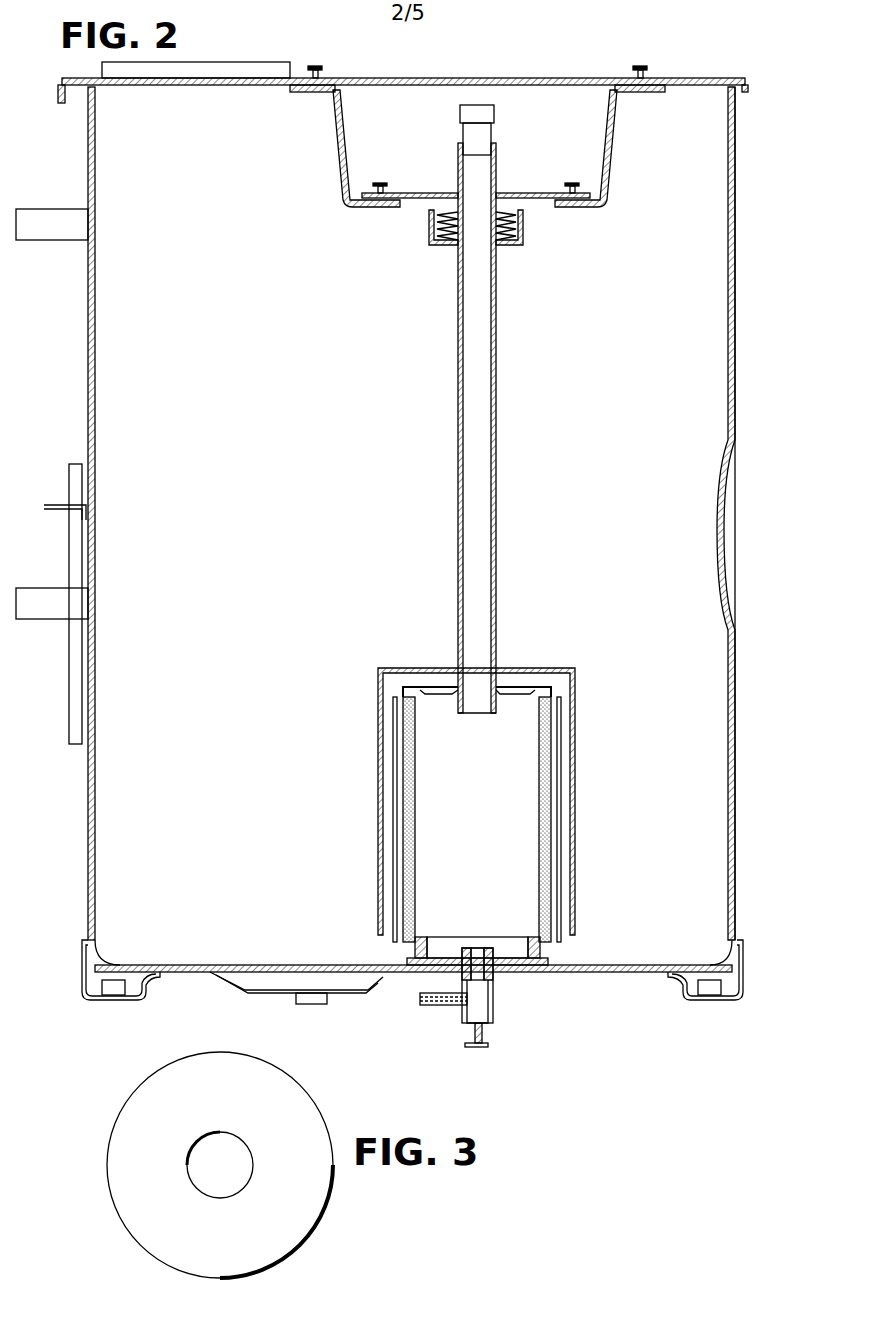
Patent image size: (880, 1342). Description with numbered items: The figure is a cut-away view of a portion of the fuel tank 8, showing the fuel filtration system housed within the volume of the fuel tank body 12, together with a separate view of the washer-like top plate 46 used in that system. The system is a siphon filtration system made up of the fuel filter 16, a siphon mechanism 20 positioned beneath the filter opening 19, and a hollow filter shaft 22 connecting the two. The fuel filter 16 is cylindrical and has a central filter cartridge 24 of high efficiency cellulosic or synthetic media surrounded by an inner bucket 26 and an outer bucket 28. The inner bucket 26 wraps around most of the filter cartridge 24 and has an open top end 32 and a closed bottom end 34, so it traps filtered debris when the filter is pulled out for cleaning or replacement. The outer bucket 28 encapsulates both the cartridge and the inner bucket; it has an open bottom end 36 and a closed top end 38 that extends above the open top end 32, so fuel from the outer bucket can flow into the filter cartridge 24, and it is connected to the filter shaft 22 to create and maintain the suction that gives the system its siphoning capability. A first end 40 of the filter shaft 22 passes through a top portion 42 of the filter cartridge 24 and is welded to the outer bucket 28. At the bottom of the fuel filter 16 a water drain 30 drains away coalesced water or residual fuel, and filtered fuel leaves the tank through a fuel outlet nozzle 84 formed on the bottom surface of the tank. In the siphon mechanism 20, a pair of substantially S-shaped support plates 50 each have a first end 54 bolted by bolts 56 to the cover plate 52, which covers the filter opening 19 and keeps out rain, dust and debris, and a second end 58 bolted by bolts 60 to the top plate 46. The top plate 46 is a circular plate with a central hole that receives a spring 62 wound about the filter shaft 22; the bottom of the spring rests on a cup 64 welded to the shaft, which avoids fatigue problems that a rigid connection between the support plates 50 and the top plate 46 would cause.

In FIG. 2, the fuel tank 8 is at (750, 405).
In FIG. 2, the fuel tank body 12 is at (688, 449).
In FIG. 2, the fuel filter 16 is at (585, 785).
In FIG. 2, the filter opening 19 is at (385, 92).
In FIG. 2, the siphon mechanism 20 is at (612, 210).
In FIG. 2, the filter shaft 22 is at (458, 455).
In FIG. 2, the filter cartridge 24 is at (487, 796).
In FIG. 2, the inner bucket 26 is at (560, 855).
In FIG. 2, the outer bucket 28 is at (570, 915).
In FIG. 2, the water drain 30 is at (490, 1015).
In FIG. 2, the open top end 32 is at (560, 690).
In FIG. 2, the closed bottom end 34 is at (555, 945).
In FIG. 2, the open bottom end 36 is at (392, 940).
In FIG. 2, the closed top end 38 is at (560, 668).
In FIG. 2, the first end 40 is at (480, 720).
In FIG. 2, the top portion 42 is at (440, 690).
In FIG. 2, the top plate 46 is at (540, 200).
In FIG. 3, the top plate 46 is at (335, 1228).
In FIG. 2, the support plates 50 is at (350, 160).
In FIG. 2, the cover plate 52 is at (522, 78).
In FIG. 2, the first end 54 is at (290, 92).
In FIG. 2, the bolts 56 is at (315, 65).
In FIG. 2, the second end 58 is at (380, 200).
In FIG. 2, the bolts 60 is at (378, 190).
In FIG. 2, the spring 62 is at (432, 215).
In FIG. 2, the cup 64 is at (520, 242).
In FIG. 2, the fuel outlet nozzle 84 is at (430, 1005).